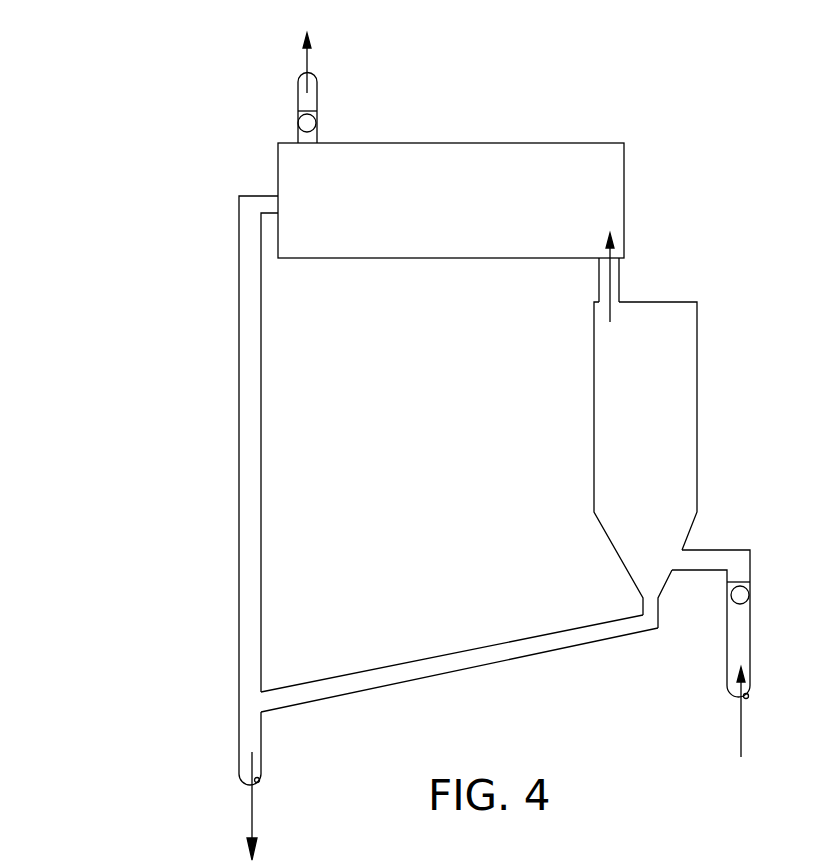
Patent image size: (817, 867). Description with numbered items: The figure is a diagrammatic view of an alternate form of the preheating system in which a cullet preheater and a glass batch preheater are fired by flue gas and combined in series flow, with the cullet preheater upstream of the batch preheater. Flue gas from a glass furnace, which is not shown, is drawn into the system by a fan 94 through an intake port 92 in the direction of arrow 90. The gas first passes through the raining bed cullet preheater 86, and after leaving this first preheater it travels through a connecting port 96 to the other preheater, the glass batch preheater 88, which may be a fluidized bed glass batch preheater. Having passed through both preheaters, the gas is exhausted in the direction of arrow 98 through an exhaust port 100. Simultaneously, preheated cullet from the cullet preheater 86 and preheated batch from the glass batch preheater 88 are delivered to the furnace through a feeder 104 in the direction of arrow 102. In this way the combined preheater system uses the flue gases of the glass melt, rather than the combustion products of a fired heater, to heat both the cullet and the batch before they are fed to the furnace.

The cullet preheater 86 is at (697, 438).
The glass batch preheater 88 is at (624, 155).
The arrow 90 is at (742, 722).
The intake port 92 is at (752, 677).
The fan 94 is at (750, 592).
The connecting port 96 is at (619, 280).
The arrow 98 is at (310, 72).
The exhaust port 100 is at (316, 118).
The arrow 102 is at (252, 812).
The feeder 104 is at (240, 737).